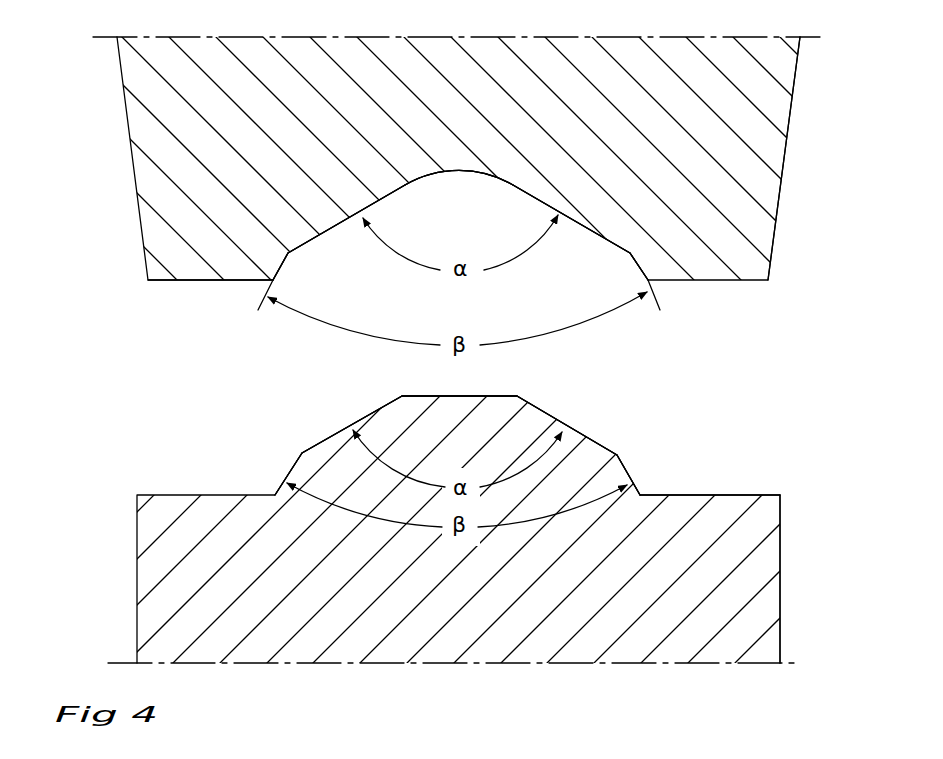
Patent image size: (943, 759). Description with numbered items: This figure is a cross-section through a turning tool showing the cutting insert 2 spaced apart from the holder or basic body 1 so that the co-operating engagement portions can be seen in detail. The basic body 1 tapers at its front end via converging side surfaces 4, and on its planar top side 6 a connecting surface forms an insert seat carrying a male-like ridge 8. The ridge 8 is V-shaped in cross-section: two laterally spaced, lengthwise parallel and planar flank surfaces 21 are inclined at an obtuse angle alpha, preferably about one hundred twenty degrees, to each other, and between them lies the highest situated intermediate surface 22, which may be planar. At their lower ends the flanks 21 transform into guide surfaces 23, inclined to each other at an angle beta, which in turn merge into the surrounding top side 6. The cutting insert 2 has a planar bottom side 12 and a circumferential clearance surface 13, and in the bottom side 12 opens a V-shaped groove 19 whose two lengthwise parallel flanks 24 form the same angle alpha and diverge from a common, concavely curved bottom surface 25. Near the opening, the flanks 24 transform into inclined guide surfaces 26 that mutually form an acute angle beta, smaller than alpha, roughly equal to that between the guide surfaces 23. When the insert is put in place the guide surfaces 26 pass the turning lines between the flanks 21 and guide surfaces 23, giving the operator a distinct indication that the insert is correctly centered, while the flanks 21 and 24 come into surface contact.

The basic body 1 is at (108, 211).
The cutting insert 2 is at (108, 568).
The side surfaces 4 is at (780, 573).
The top side 6 is at (722, 495).
The ridge 8 is at (630, 425).
The bottom side 12 is at (192, 281).
The clearance surface 13 is at (780, 192).
The groove 19 is at (586, 257).
The flank surfaces 21 is at (390, 402).
The intermediate surface 22 is at (462, 396).
The guide surfaces 23 is at (285, 480).
The flanks 24 is at (330, 231).
The bottom surface 25 is at (452, 174).
The guide surfaces 26 is at (286, 262).